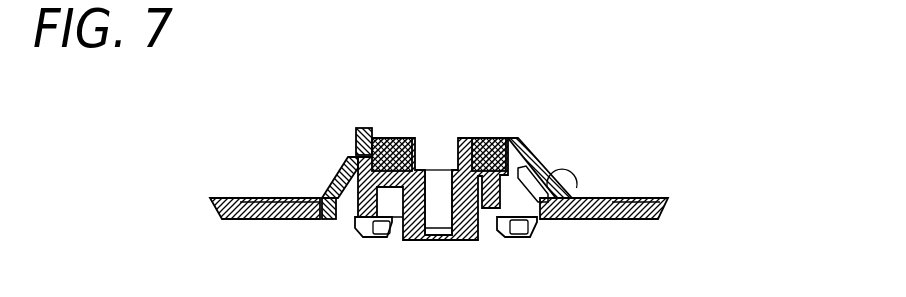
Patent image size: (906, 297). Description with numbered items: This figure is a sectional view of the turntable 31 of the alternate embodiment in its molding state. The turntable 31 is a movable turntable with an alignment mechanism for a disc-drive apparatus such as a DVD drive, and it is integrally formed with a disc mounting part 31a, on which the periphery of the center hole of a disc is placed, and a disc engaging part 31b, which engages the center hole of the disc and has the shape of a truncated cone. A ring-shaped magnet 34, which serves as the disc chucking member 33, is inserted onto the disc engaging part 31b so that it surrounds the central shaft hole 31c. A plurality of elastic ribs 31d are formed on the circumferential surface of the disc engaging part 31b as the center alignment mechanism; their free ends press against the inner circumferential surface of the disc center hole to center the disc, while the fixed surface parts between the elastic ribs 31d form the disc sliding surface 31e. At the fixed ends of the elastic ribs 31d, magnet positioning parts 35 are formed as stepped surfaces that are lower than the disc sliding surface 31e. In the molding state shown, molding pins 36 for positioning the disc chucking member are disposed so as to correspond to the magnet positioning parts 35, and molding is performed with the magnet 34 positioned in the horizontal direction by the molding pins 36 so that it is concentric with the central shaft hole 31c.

The turntable 31 is at (211, 148).
The disc mounting part 31a is at (672, 207).
The disc engaging part 31b is at (583, 220).
The central shaft hole 31c is at (450, 137).
The elastic ribs 31d is at (332, 216).
The disc sliding surface 31e is at (537, 161).
The disc chucking member 33 is at (494, 139).
The ring-shaped magnet 34 is at (392, 137).
The magnet positioning parts 35 is at (347, 152).
The molding pins 36 is at (362, 128).